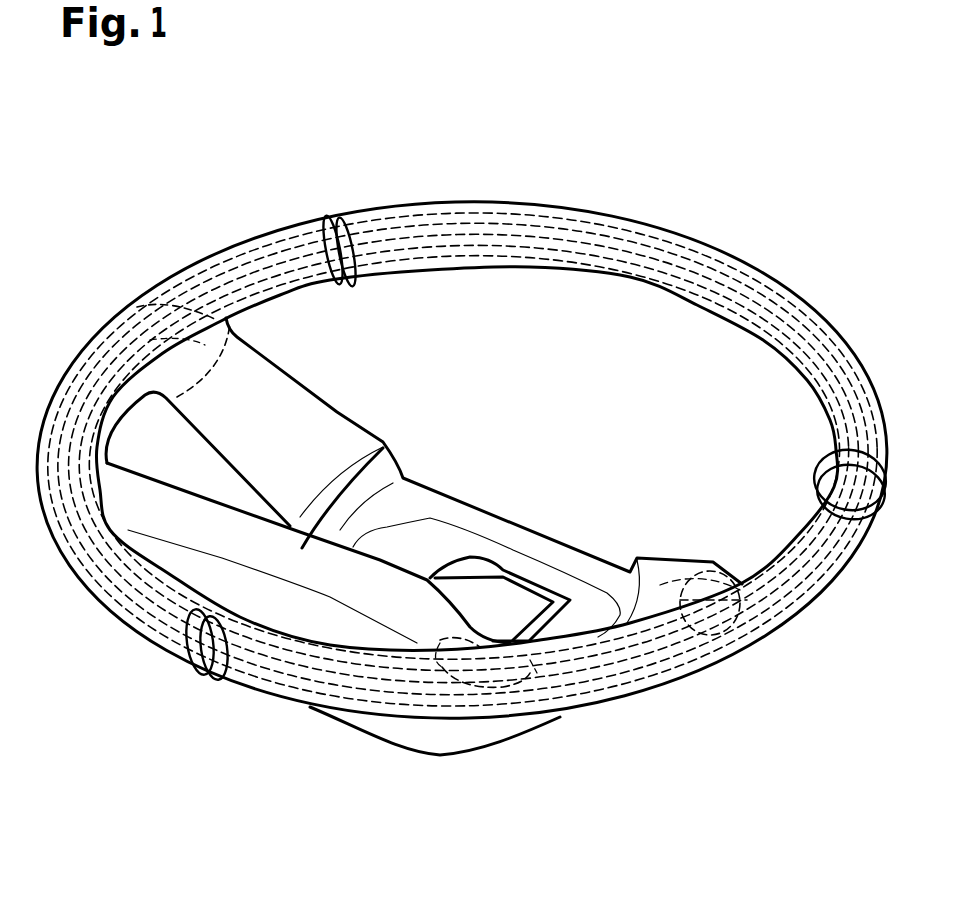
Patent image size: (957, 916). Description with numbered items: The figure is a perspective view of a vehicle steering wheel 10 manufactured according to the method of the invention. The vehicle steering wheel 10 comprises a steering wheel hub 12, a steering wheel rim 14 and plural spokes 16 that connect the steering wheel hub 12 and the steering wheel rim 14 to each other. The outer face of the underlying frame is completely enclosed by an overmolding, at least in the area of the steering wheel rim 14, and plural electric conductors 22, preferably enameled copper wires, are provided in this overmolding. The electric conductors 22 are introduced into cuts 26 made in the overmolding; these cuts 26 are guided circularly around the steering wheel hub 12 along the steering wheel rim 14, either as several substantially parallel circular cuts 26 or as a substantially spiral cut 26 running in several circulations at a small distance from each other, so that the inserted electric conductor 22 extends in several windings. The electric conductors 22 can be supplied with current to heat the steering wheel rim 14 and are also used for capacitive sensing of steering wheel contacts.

The vehicle steering wheel 10 is at (742, 187).
The steering wheel hub 12 is at (500, 587).
The steering wheel rim 14 is at (552, 218).
The spokes 16 is at (330, 420).
The electric conductors 22 is at (230, 263).
The cuts 26 is at (177, 324).